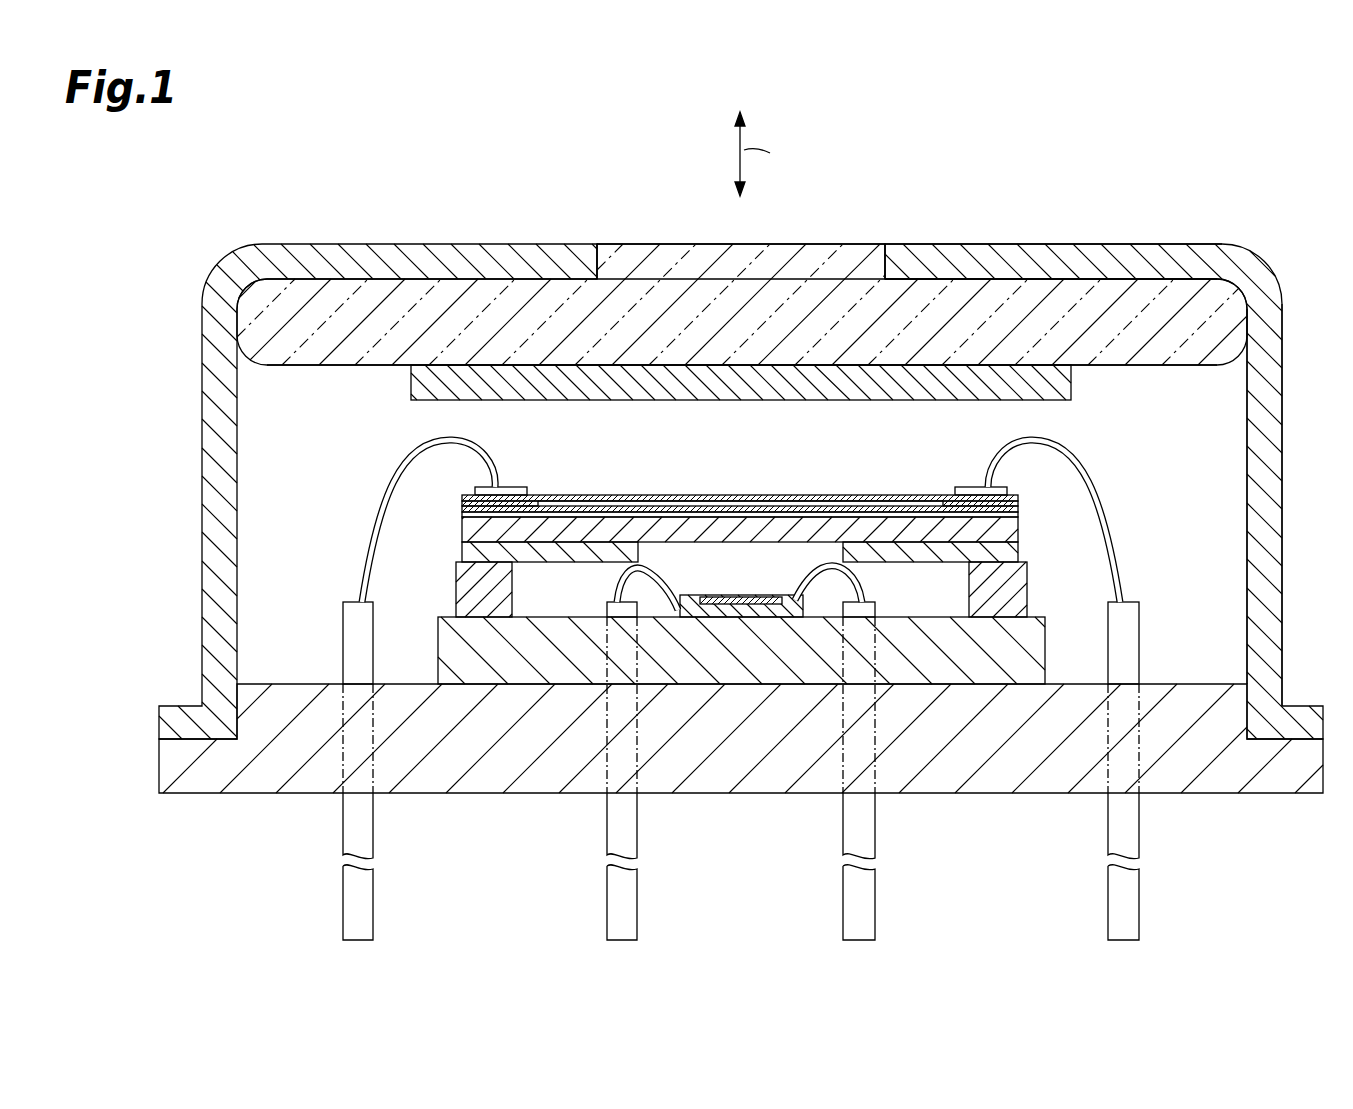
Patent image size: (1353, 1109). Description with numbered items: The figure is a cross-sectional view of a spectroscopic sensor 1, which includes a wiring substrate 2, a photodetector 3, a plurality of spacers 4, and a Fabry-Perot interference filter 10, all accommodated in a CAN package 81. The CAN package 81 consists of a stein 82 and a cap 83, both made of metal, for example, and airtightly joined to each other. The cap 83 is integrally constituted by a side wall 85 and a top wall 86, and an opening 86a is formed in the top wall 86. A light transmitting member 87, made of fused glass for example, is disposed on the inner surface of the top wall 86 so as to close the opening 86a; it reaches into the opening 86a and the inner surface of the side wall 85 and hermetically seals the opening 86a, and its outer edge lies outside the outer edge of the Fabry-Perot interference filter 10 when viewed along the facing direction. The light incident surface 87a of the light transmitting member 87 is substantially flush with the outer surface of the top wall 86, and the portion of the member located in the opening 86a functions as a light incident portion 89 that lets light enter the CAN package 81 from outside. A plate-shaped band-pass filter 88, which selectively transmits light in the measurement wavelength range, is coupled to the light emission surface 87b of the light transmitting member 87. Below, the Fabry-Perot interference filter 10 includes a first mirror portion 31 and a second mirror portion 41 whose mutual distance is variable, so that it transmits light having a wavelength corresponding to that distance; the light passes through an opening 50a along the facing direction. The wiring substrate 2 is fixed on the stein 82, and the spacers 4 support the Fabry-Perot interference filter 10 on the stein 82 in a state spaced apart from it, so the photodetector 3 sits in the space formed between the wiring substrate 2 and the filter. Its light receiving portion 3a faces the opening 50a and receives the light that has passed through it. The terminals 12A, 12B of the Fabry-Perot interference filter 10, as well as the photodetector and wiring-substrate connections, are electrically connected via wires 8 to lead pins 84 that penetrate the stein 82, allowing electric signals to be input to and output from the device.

The spectroscopic sensor 1 is at (1255, 180).
The wiring substrate 2 is at (978, 660).
The photodetector 3 is at (770, 613).
The light receiving portion 3a is at (733, 608).
The spacers 4 is at (463, 593).
The wires 8 is at (386, 509).
The Fabry-Perot interference filter 10 is at (740, 495).
The terminal 12A is at (962, 487).
The terminal 12B is at (500, 487).
The first mirror portion 31 is at (660, 498).
The second mirror portion 41 is at (757, 525).
The opening 50a is at (840, 553).
The CAN package 81 is at (420, 243).
The stein 82 is at (1220, 775).
The cap 83 is at (1273, 515).
The lead pins 84 is at (358, 925).
The side wall 85 is at (1273, 430).
The top wall 86 is at (990, 258).
The opening 86a is at (605, 260).
The light transmitting member 87 is at (1083, 300).
The light incident surface 87a is at (835, 245).
The light emission surface 87b is at (1107, 366).
The band-pass filter 88 is at (428, 380).
The light incident portion 89 is at (692, 262).